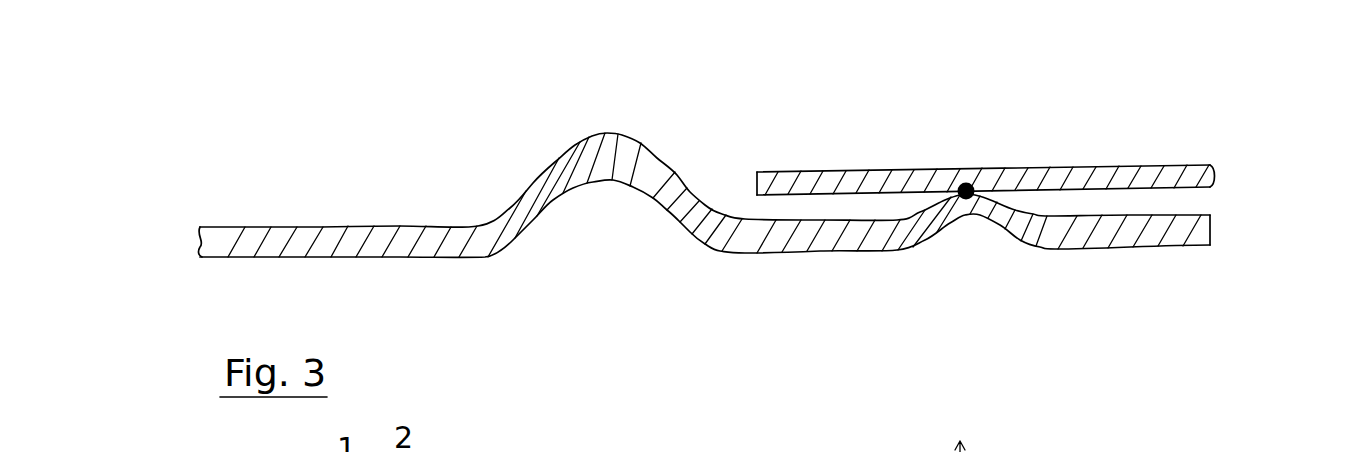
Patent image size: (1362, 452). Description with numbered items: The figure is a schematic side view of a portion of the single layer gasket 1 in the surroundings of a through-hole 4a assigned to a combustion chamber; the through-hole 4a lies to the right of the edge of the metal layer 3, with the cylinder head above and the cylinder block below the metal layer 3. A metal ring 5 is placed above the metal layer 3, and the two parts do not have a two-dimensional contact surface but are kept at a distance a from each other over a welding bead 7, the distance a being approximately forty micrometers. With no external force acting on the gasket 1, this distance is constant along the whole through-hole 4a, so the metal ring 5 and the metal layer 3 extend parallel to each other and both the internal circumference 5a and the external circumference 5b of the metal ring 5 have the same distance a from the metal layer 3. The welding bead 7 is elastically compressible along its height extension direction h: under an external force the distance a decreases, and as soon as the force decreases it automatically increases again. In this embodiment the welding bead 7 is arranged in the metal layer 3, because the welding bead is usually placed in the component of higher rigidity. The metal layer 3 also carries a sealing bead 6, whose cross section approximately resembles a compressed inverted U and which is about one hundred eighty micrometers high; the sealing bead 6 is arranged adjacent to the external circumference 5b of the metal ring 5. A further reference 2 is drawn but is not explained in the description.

The gasket 1 is at (333, 106).
The sealing element 2 is at (379, 98).
The metal layer 3 is at (347, 250).
The through-hole 4a is at (1332, 212).
The metal ring 5 is at (832, 180).
The internal circumference 5a is at (1211, 177).
The external circumference 5b is at (755, 183).
The sealing bead 6 is at (604, 257).
The welding bead 7 is at (960, 208).
The height extension direction h is at (963, 40).
The distance a is at (1222, 188).